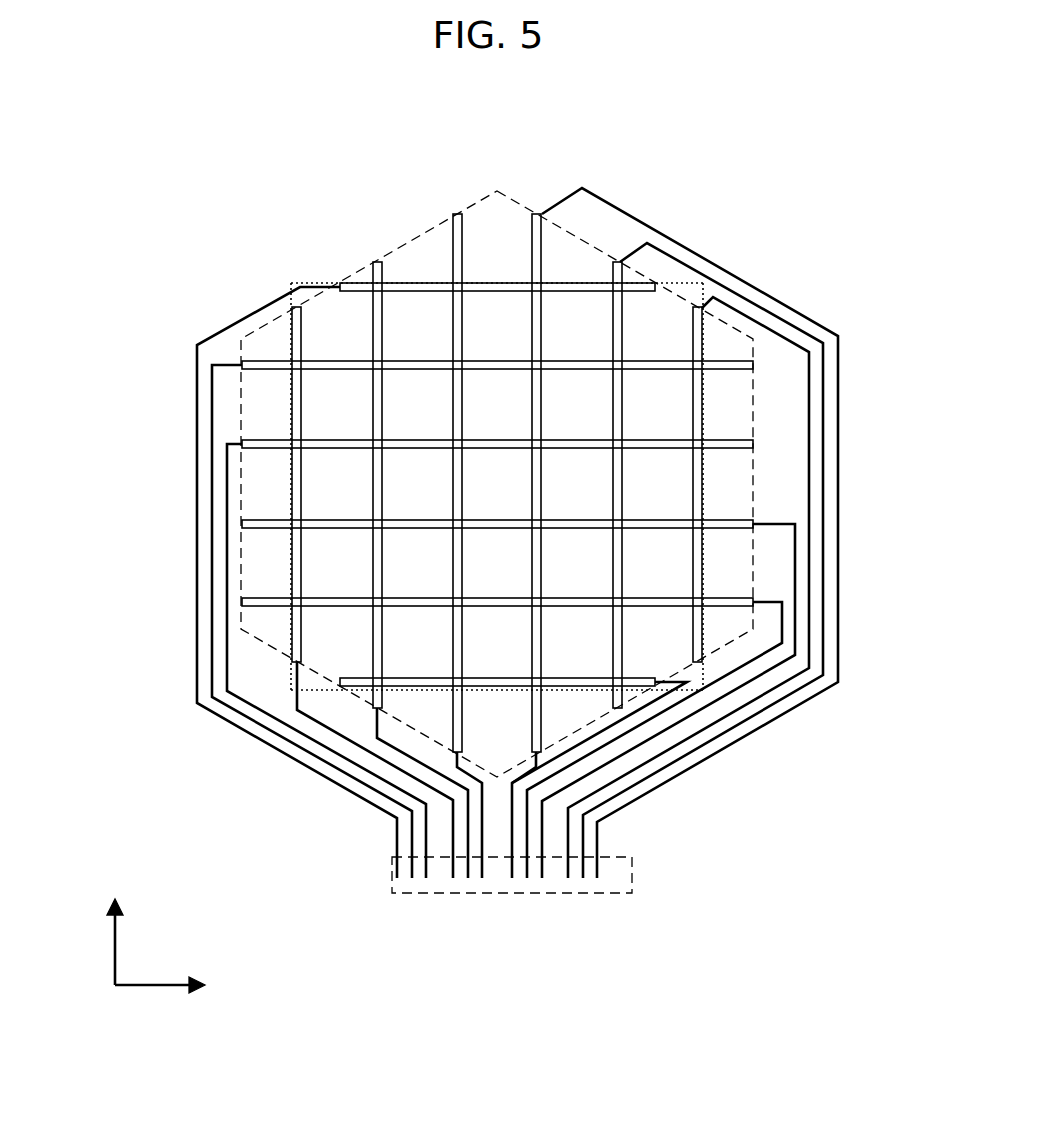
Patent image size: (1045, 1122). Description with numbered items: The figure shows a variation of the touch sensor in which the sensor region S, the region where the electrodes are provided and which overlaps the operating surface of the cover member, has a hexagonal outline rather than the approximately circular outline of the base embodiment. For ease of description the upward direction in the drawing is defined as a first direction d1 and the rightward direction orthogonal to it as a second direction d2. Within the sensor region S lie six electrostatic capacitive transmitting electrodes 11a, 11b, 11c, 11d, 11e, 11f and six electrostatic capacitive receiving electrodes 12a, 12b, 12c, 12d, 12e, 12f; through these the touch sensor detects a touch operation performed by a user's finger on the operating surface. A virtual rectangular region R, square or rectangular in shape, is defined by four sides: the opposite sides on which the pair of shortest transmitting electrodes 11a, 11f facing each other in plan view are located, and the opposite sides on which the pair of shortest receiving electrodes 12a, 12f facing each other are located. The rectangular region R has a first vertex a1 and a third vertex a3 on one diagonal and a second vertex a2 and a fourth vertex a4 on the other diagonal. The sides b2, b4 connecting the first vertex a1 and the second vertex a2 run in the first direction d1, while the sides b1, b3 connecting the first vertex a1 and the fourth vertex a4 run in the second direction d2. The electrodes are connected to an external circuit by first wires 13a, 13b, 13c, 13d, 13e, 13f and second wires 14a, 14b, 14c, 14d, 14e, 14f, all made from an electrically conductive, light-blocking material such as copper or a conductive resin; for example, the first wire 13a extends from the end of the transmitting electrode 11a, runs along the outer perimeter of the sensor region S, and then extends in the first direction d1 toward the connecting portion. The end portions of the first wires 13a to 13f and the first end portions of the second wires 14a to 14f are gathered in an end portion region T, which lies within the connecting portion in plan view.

The transmitting electrode 11a is at (290, 333).
The transmitting electrode 11b is at (380, 280).
The transmitting electrode 11c is at (461, 247).
The transmitting electrode 11d is at (542, 250).
The transmitting electrode 11e is at (625, 268).
The transmitting electrode 11f is at (702, 325).
The receiving electrode 12a is at (563, 677).
The receiving electrode 12b is at (563, 597).
The receiving electrode 12c is at (563, 519).
The receiving electrode 12d is at (563, 439).
The receiving electrode 12e is at (563, 360).
The receiving electrode 12f is at (640, 292).
The first wire 13a is at (345, 740).
The first wire 13b is at (405, 755).
The first wire 13c is at (482, 858).
The first wire 13d is at (838, 455).
The first wire 13e is at (823, 500).
The first wire 13f is at (809, 548).
The second wire 14a is at (690, 700).
The second wire 14b is at (655, 725).
The second wire 14c is at (612, 765).
The second wire 14d is at (227, 548).
The second wire 14e is at (212, 500).
The second wire 14f is at (197, 455).
The rectangular region R is at (302, 278).
The sensor region S is at (241, 580).
The end portion region T is at (632, 892).
The first vertex a1 is at (292, 690).
The second vertex a2 is at (703, 690).
The third vertex a3 is at (703, 283).
The fourth vertex a4 is at (290, 283).
The side b1 is at (312, 690).
The side b2 is at (703, 400).
The side b3 is at (314, 283).
The side b4 is at (291, 400).
The first direction d1 is at (115, 957).
The second direction d2 is at (150, 990).